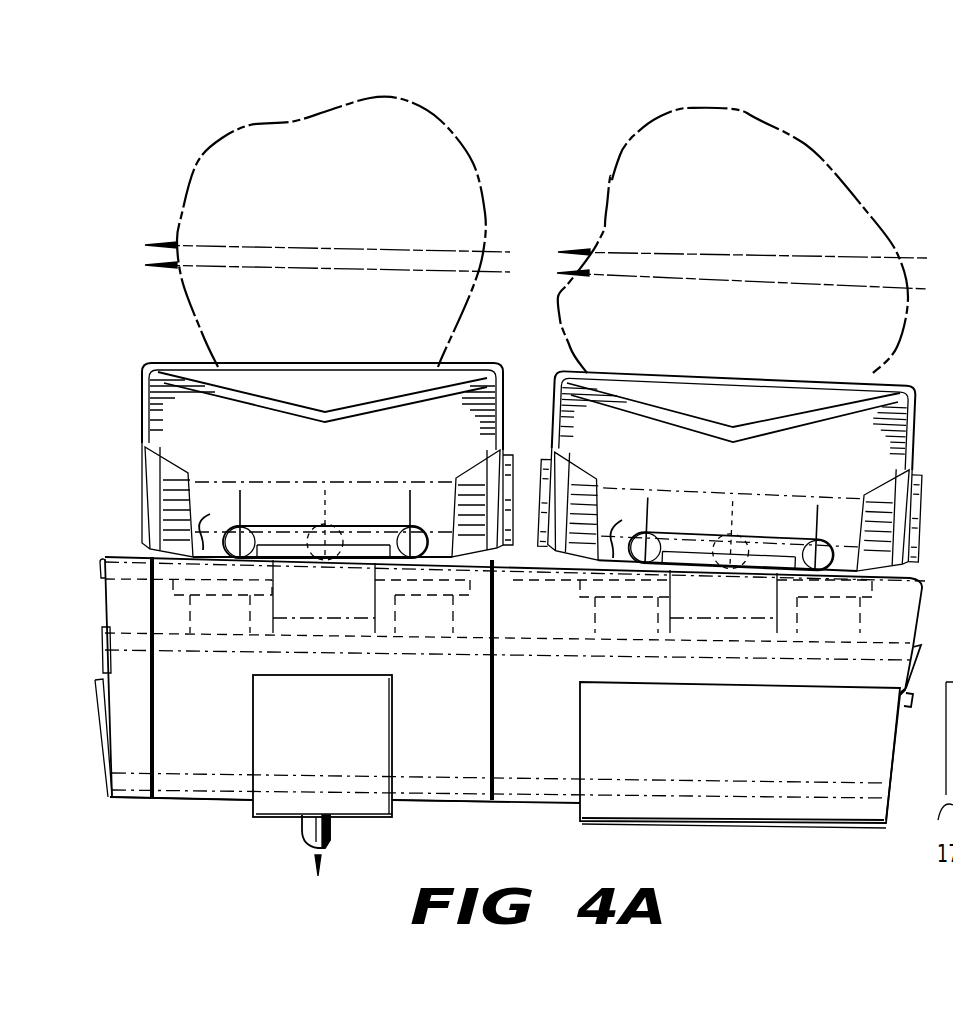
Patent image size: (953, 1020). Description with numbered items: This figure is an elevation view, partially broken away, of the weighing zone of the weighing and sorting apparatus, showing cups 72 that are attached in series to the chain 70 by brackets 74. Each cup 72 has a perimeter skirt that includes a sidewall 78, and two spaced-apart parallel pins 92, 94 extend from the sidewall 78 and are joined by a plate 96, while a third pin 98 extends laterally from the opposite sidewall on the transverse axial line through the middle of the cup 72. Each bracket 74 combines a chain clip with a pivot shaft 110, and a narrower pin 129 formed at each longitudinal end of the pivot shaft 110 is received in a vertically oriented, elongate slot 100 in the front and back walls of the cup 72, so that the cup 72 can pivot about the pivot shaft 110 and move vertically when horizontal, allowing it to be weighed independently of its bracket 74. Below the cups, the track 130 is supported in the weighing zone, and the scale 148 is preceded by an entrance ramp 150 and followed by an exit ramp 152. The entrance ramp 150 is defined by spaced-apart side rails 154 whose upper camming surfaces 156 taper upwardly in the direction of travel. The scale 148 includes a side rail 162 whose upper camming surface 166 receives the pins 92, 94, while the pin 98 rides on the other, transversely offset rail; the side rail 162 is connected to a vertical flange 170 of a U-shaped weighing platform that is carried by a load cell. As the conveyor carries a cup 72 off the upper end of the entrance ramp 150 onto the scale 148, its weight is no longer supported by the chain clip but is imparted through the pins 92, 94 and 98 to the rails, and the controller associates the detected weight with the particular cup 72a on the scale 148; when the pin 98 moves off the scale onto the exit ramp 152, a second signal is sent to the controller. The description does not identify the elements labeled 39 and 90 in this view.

The tooth 39 is at (407, 127).
The cup 72a is at (460, 366).
The cup 72 is at (893, 376).
The V-shaped channel 90 is at (360, 400).
The sidewall 78 is at (336, 464).
The pivot shaft 110 is at (477, 488).
The pin 129 is at (543, 500).
The slot 100 is at (917, 502).
The upper camming surface 166 is at (218, 519).
The upper camming surface 156 is at (632, 526).
The pin 92 is at (240, 530).
The plate 96 is at (282, 528).
The third pin 98 is at (367, 524).
The pin 94 is at (405, 526).
The chain 70 is at (514, 585).
The bracket 74 is at (335, 605).
The side rail 162 is at (211, 702).
The side rail 154 is at (550, 718).
The exit ramp 152 is at (122, 806).
The scale 148 is at (430, 812).
The track 130 is at (505, 752).
The entrance ramp 150 is at (832, 834).
The vertical flange 170 is at (343, 808).